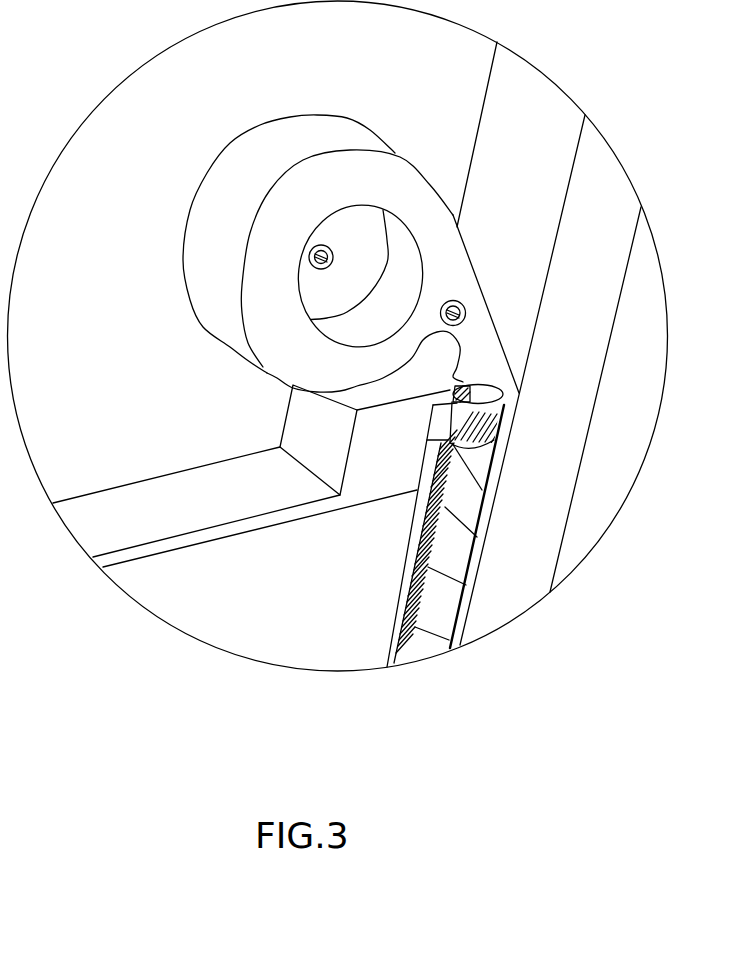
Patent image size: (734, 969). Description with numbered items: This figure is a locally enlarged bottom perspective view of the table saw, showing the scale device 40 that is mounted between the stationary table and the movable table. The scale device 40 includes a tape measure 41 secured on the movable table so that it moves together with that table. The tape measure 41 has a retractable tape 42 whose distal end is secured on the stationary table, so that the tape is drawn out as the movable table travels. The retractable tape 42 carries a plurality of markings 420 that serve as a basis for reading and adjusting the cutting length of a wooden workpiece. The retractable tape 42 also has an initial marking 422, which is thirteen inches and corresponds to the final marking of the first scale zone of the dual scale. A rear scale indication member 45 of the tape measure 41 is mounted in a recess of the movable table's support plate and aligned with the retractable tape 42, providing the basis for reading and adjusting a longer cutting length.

The scale device 40 is at (400, 566).
The tape measure 41 is at (210, 265).
The retractable tape 42 is at (408, 612).
The rear scale indication member 45 is at (477, 428).
The markings 420 is at (475, 535).
The initial marking 422 is at (448, 650).